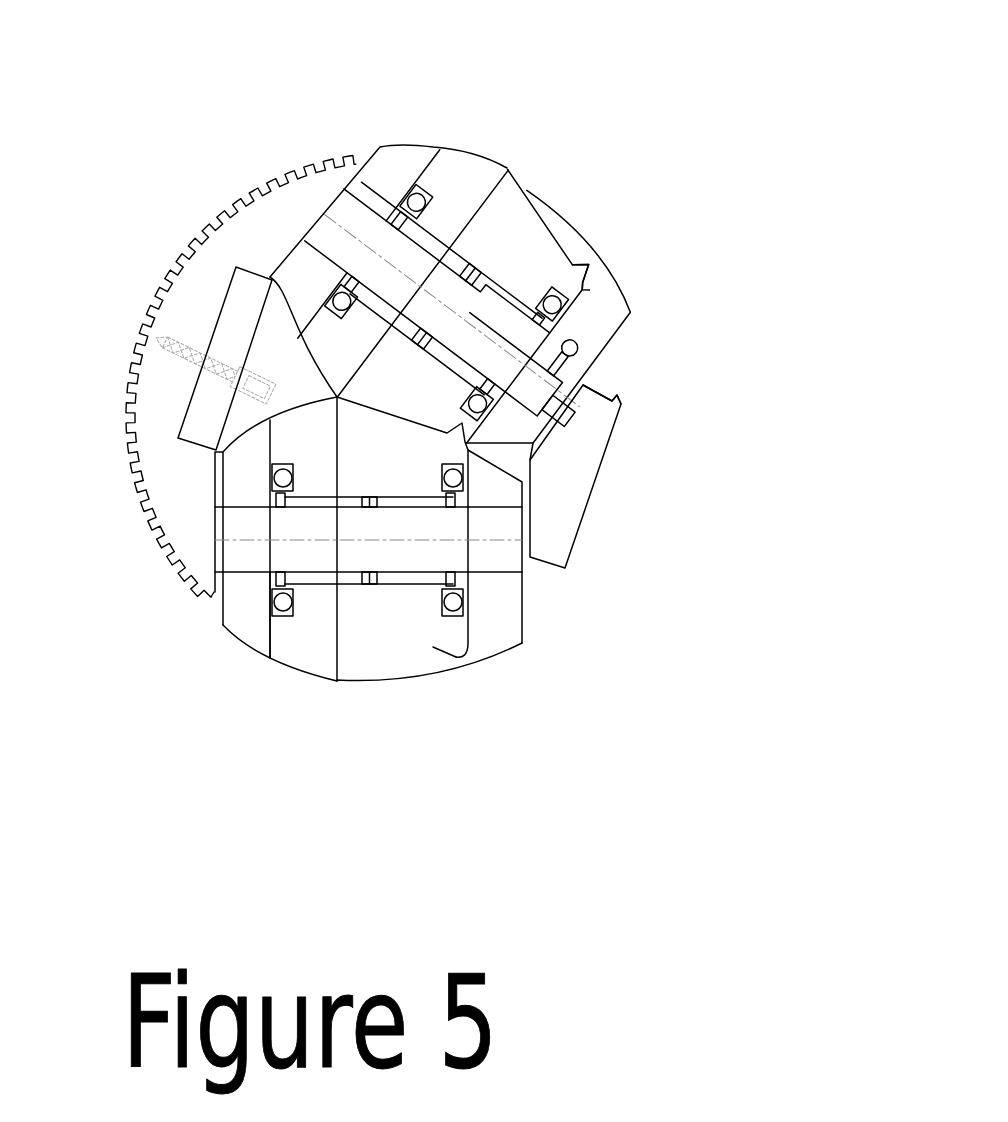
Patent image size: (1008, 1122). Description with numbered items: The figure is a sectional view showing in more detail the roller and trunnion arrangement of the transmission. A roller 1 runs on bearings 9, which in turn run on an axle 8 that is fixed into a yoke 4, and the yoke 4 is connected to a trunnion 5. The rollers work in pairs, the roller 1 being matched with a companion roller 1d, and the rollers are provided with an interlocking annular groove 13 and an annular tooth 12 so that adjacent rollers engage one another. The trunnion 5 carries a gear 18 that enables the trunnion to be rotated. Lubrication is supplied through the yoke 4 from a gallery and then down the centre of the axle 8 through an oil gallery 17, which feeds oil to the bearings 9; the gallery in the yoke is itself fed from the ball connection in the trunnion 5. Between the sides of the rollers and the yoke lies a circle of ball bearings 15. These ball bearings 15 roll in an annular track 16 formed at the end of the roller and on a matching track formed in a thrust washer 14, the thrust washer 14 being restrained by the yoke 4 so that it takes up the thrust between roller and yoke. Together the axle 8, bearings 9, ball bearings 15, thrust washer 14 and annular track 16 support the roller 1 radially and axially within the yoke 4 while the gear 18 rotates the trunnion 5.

The roller 1 is at (460, 192).
The roller 1d is at (378, 632).
The yoke 4 is at (383, 165).
The trunnion 5 is at (578, 470).
The axle 8 is at (568, 358).
The bearing 9 is at (483, 282).
The annular tooth 12 is at (487, 663).
The annular groove 13 is at (577, 275).
The thrust washer 14 is at (272, 580).
The ball bearing 15 is at (282, 603).
The annular track 16 is at (292, 615).
The oil gallery 17 is at (620, 405).
The gear 18 is at (206, 276).